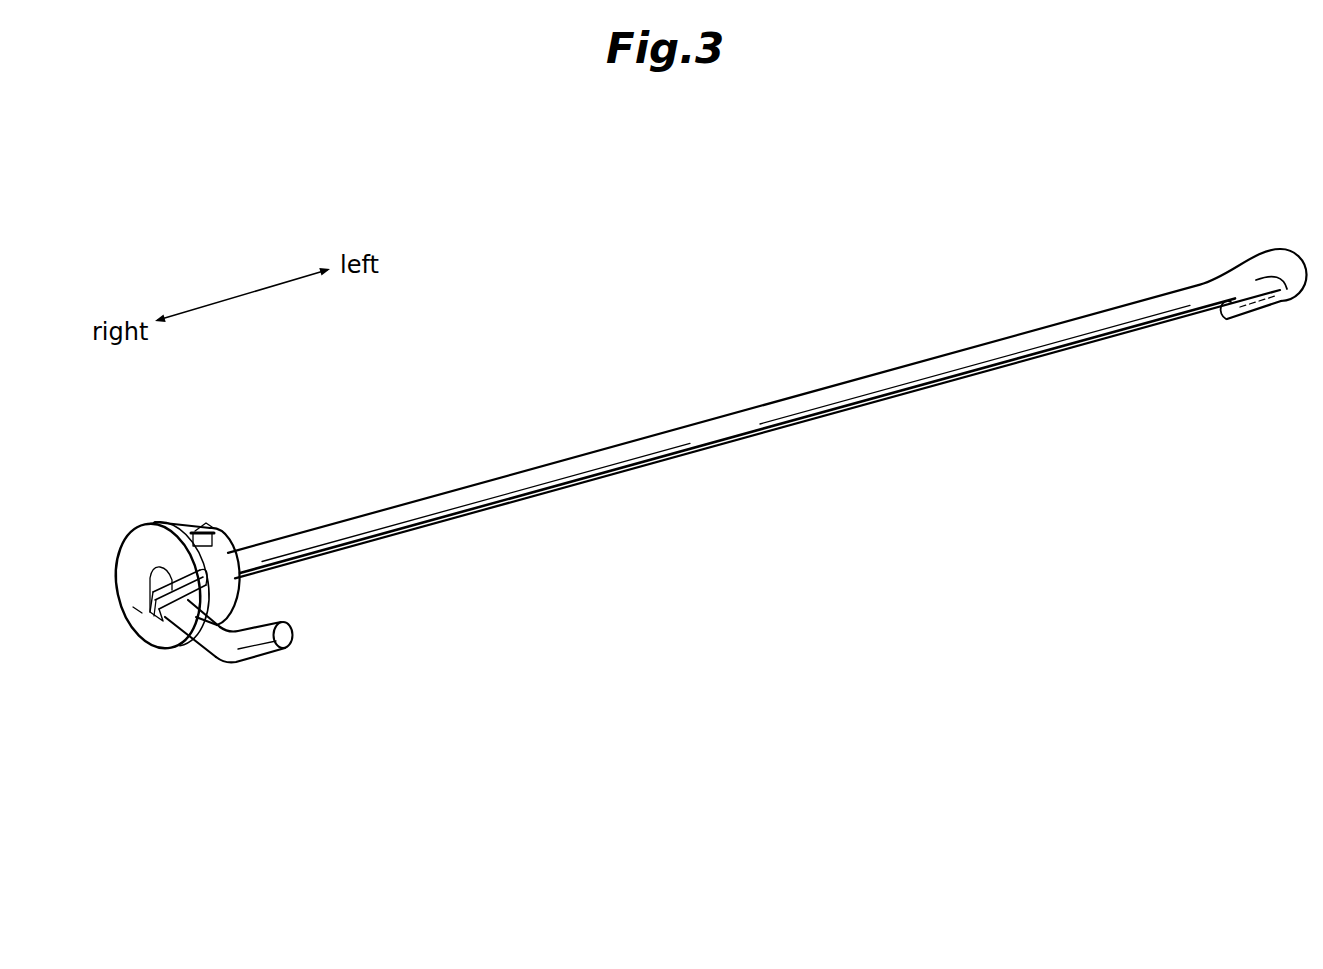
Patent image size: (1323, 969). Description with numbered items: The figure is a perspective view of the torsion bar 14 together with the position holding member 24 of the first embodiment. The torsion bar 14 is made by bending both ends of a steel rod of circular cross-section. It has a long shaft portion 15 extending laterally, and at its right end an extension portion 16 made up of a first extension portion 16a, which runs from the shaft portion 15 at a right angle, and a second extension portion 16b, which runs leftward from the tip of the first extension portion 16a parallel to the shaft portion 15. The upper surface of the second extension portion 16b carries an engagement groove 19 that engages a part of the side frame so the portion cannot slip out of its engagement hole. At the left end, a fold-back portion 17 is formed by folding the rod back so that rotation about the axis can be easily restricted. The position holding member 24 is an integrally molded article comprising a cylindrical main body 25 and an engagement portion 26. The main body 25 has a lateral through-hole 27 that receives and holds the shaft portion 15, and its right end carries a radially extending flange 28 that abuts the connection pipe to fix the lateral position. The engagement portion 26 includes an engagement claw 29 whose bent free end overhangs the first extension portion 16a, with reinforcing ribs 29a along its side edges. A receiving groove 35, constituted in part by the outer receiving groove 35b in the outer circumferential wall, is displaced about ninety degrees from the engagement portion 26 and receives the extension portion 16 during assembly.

The torsion bar 14 is at (767, 390).
The shaft portion 15 is at (715, 418).
The extension portion 16 is at (249, 696).
The first extension portion 16a is at (198, 648).
The second extension portion 16b is at (279, 682).
The fold-back portion 17 is at (1232, 271).
The engagement groove 19 is at (272, 645).
The position holding member 24 is at (125, 579).
The main body 25 is at (229, 528).
The engagement portion 26 is at (138, 610).
The through-hole 27 is at (140, 560).
The flange 28 is at (162, 522).
The engagement claw 29 is at (230, 632).
The ribs 29a is at (240, 578).
The receiving groove 35 is at (247, 512).
The outer receiving groove 35b is at (222, 529).